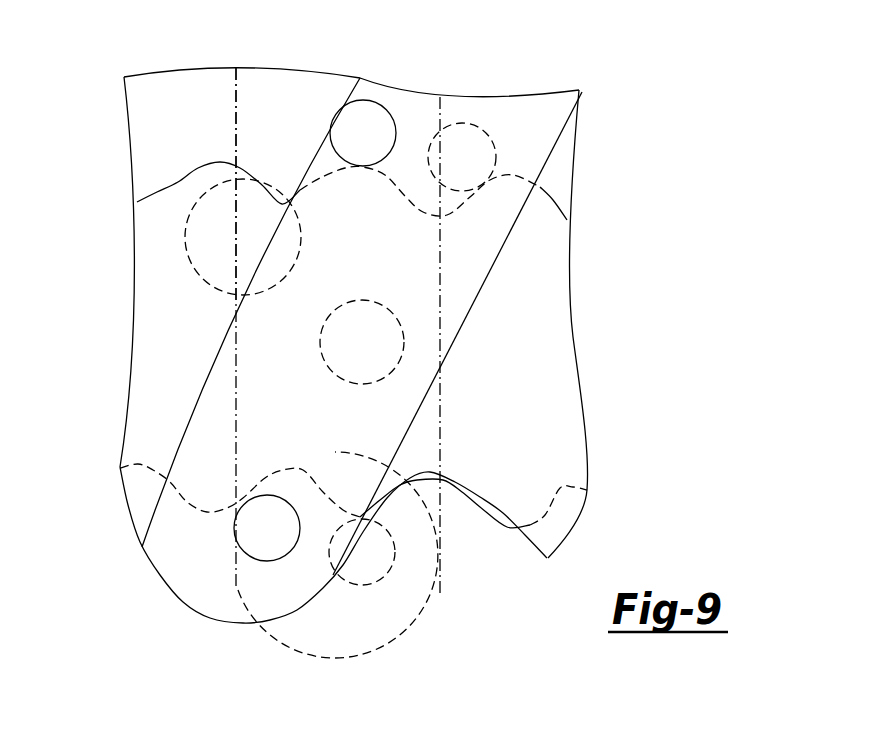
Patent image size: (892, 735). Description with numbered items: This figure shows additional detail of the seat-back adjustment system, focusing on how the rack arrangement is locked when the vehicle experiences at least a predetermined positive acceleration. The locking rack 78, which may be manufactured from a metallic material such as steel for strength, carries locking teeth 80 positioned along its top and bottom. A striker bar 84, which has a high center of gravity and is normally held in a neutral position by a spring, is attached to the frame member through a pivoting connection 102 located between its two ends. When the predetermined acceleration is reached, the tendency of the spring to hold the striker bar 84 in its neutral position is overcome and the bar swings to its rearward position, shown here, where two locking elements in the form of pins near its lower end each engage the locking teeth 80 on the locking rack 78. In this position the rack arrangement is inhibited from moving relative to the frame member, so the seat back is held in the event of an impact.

The locking rack 78 is at (575, 338).
The locking teeth 80 is at (178, 182).
The striker bar 84 is at (236, 97).
The pivoting connection 102 is at (320, 346).